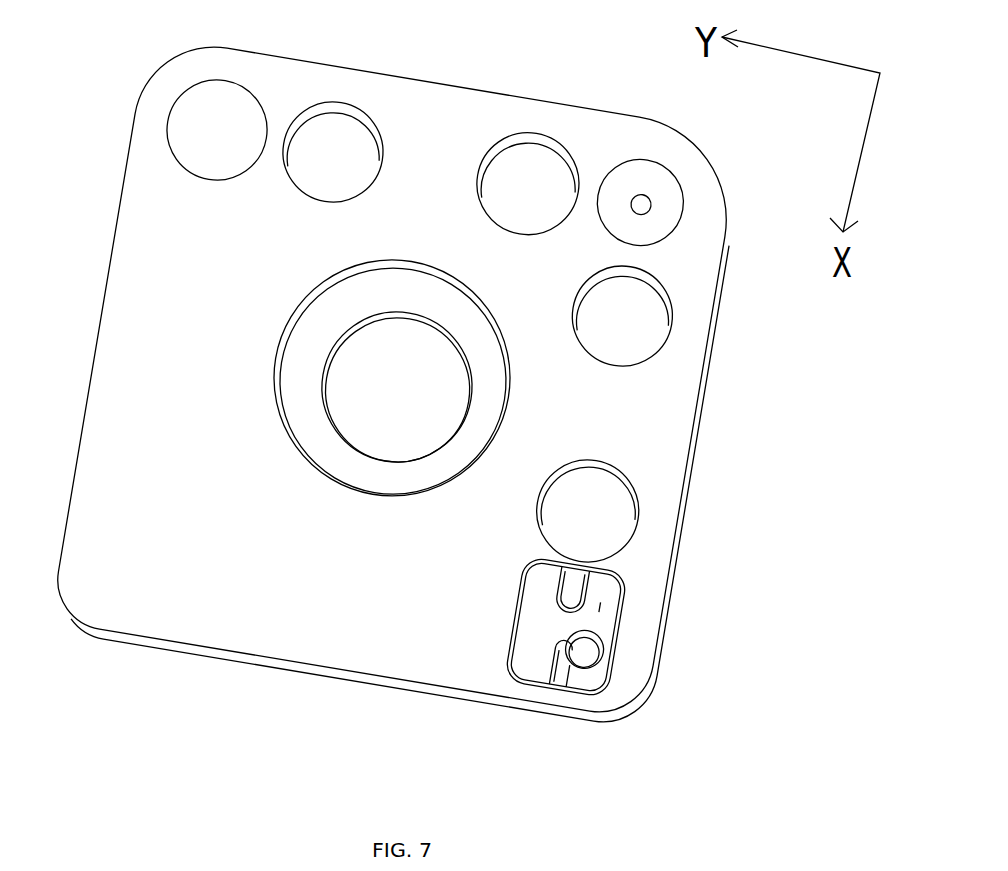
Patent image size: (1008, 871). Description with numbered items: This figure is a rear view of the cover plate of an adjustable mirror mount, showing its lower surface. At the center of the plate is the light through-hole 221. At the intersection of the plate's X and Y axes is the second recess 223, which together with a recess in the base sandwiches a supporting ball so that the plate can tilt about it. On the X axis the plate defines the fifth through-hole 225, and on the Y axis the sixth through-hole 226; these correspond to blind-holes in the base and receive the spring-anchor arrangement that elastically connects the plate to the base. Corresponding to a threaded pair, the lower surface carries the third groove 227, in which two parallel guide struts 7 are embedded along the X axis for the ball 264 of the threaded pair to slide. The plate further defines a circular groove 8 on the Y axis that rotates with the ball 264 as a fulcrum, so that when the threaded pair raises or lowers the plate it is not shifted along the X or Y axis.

The guide struts 7 is at (600, 608).
The circular groove 8 is at (212, 138).
The light through-hole 221 is at (412, 383).
The second recess 223 is at (663, 207).
The fifth through-hole 225 is at (592, 523).
The sixth through-hole 226 is at (323, 160).
The third groove 227 is at (512, 626).
The ball 264 is at (581, 648).